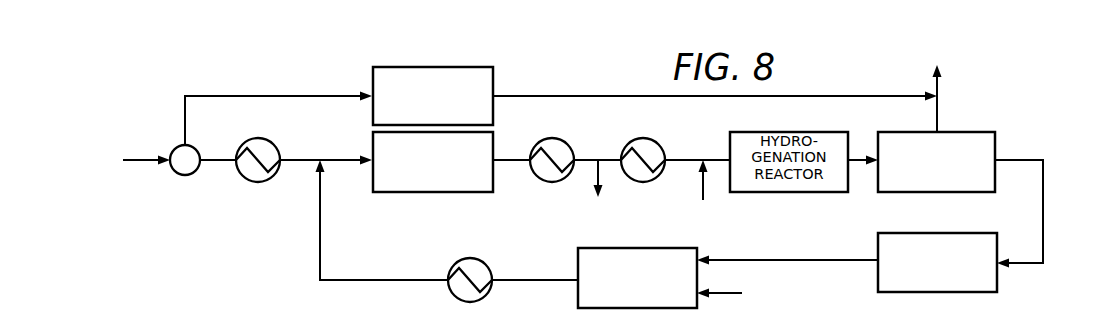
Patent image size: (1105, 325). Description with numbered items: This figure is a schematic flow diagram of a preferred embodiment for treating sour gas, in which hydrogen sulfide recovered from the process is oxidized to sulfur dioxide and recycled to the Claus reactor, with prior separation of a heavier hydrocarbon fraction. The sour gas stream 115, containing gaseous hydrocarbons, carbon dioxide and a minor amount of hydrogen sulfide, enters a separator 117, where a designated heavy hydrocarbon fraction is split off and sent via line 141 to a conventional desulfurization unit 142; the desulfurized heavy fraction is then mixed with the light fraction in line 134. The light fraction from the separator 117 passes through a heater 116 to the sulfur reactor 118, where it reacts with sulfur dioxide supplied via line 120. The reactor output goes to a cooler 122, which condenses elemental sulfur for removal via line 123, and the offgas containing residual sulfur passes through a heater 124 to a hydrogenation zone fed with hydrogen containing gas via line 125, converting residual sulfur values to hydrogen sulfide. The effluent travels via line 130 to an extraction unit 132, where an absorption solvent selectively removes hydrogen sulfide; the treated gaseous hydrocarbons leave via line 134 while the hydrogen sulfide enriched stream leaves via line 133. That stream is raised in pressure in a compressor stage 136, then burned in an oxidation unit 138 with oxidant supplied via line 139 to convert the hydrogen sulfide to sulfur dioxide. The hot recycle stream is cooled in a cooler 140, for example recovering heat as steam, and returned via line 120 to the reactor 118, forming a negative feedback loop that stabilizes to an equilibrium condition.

The sour gas stream 115 is at (141, 155).
The heater 116 is at (279, 149).
The separator 117 is at (193, 151).
The sulfur reactor 118 is at (431, 192).
The sulfur dioxide supply line 120 is at (319, 243).
The cooler 122 is at (556, 138).
The sulfur removal line 123 is at (592, 173).
The heater 124 is at (653, 139).
The hydrogen supply line 125 is at (700, 182).
The effluent line 130 is at (856, 155).
The extraction unit 132 is at (950, 192).
The hydrogen sulfide enriched stream line 133 is at (1044, 161).
The hydrocarbon withdrawal line 134 is at (939, 112).
The compressor stage 136 is at (877, 242).
The oxidation unit 138 is at (578, 262).
The oxidant supply line 139 is at (734, 291).
The cooler 140 is at (449, 271).
The heavy hydrocarbon fraction line 141 is at (271, 96).
The desulfurization unit 142 is at (490, 67).